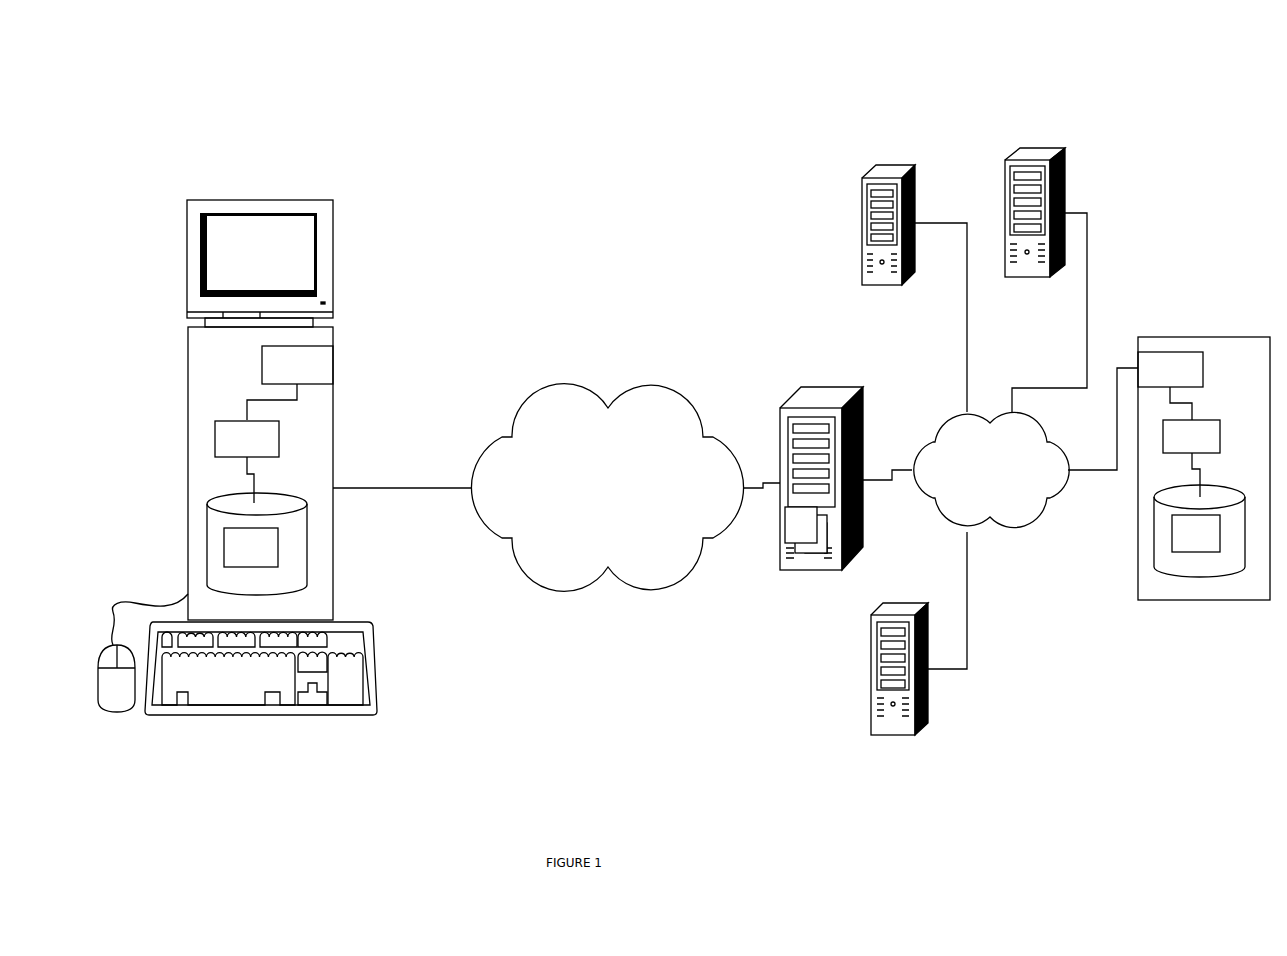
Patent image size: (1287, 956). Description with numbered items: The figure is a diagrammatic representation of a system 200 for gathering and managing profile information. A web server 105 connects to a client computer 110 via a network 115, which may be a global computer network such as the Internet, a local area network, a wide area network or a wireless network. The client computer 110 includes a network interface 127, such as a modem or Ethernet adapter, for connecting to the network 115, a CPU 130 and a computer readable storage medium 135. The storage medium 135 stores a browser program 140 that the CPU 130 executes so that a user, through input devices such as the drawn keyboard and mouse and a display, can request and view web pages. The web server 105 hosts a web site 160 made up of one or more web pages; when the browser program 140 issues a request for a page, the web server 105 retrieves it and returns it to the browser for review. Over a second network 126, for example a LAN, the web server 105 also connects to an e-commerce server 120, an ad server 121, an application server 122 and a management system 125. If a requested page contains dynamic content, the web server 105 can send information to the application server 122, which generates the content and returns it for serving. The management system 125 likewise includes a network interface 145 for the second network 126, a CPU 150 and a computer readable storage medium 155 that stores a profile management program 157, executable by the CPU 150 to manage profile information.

The system environment 200 is at (244, 66).
The client computer 110 is at (158, 205).
The network interface 127 is at (290, 383).
The CPU 130 is at (247, 462).
The computer readable storage medium 135 is at (213, 502).
The browser program 140 is at (220, 553).
The network 115 is at (608, 378).
The web server 105 is at (813, 397).
The web site 160 is at (792, 528).
The second network 126 is at (991, 469).
The e-commerce server 120 is at (853, 152).
The application server 122 is at (1007, 145).
The ad server 121 is at (863, 655).
The management system 125 is at (1248, 330).
The network interface 145 is at (1170, 386).
The CPU 150 is at (1191, 458).
The computer readable storage medium 155 is at (1155, 529).
The profile management program 157 is at (1183, 533).